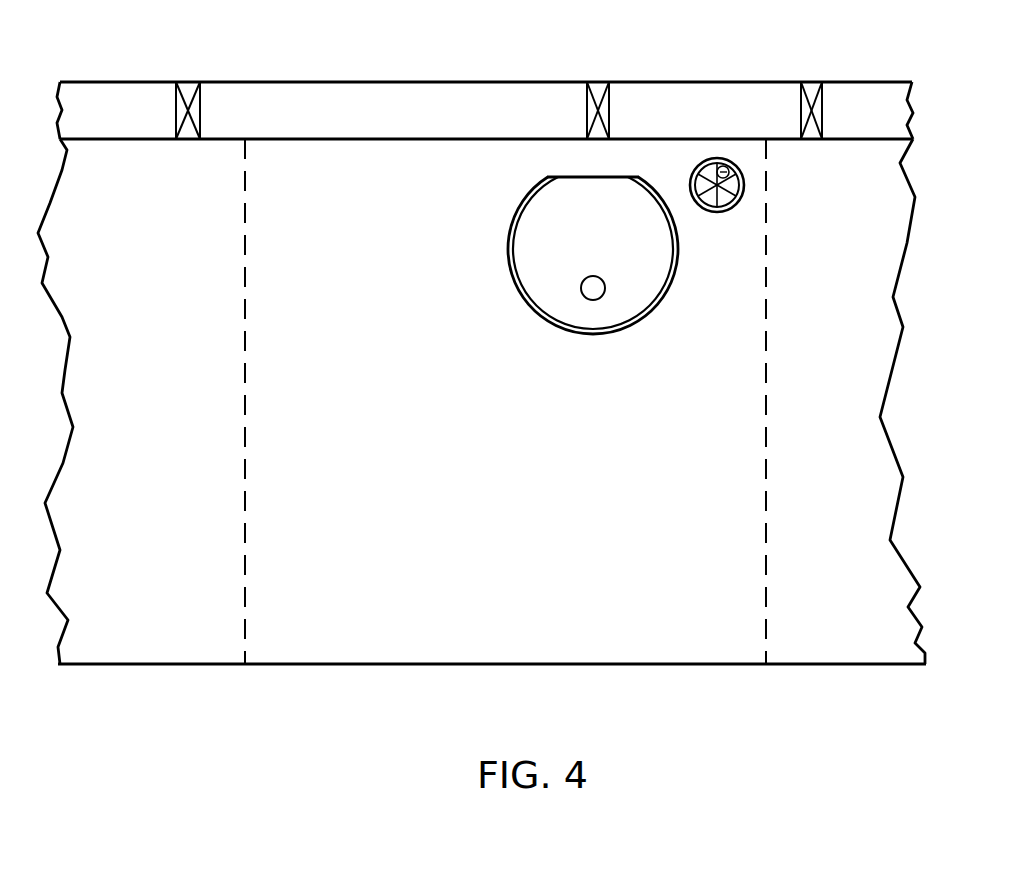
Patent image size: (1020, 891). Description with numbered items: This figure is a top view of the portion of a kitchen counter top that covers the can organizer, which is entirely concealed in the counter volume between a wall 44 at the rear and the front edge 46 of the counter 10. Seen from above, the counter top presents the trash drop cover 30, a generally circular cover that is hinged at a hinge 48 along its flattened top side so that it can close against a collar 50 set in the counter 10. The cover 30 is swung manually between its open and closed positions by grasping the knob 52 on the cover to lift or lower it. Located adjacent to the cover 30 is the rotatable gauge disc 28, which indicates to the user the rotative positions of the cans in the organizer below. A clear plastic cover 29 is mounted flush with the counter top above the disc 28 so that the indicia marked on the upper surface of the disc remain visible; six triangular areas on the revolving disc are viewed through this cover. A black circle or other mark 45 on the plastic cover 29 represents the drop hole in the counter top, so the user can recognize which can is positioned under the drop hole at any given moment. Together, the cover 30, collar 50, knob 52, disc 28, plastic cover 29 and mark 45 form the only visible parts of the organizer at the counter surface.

The counter 10 is at (462, 435).
The rotatable gauge disc 28 is at (728, 199).
The clear plastic cover 29 is at (718, 210).
The trash drop cover 30 is at (535, 260).
The wall 44 is at (502, 105).
The mark 45 is at (729, 170).
The front edge 46 is at (637, 665).
The hinge 48 is at (587, 177).
The collar 50 is at (590, 335).
The knob 52 is at (600, 287).